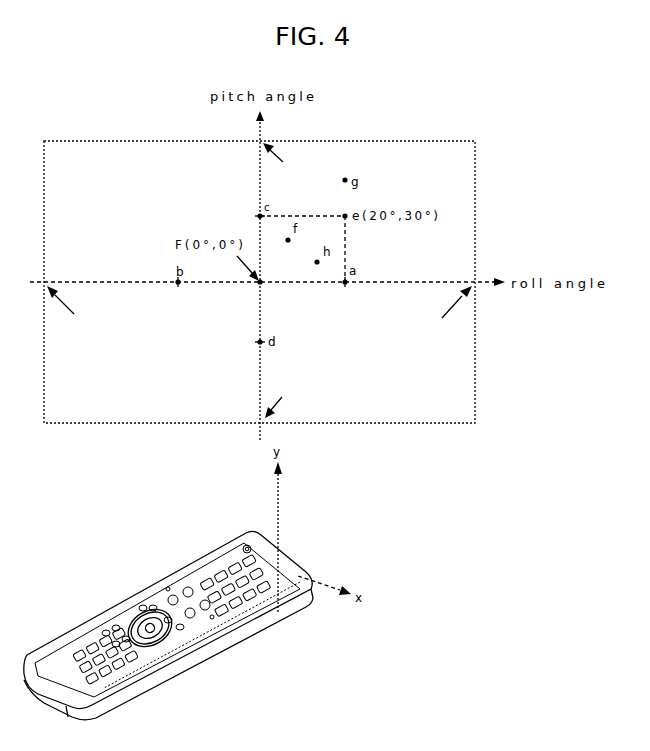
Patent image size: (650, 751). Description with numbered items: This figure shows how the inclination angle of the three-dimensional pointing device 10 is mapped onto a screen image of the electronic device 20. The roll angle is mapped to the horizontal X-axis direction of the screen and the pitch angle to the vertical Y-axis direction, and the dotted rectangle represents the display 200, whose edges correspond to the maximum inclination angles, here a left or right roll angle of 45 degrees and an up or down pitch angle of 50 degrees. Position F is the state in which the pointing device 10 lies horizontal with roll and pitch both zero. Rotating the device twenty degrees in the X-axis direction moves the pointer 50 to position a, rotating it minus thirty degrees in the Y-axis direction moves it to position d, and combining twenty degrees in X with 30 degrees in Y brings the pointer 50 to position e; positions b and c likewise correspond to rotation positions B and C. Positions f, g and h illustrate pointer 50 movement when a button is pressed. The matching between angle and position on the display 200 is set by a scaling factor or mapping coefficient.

The display 200 is at (475, 190).
The 3D pointing device 10 is at (173, 662).
The 30 degree pitch tick 30 is at (243, 279).
The electronic device 20 is at (259, 288).
The pointer 50 is at (286, 280).
The 45 degree roll limit 45 is at (259, 309).